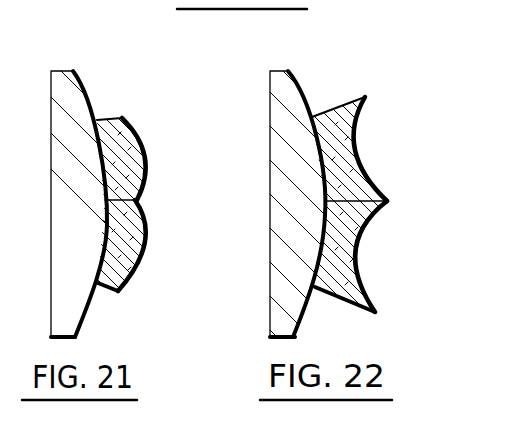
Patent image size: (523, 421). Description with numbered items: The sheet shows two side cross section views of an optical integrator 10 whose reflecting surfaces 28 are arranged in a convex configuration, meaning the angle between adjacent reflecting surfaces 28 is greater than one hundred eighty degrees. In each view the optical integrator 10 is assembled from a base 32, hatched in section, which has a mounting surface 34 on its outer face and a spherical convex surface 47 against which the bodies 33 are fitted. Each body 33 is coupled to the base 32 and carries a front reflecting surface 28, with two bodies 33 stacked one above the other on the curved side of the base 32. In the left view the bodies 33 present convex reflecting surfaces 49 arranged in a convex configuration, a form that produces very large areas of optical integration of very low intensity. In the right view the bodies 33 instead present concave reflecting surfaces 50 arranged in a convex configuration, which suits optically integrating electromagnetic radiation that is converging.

In FIG. 21, the optical integrator 10 is at (14, 114).
In FIG. 22, the optical integrator 10 is at (240, 70).
In FIG. 21, the reflecting surfaces 28 is at (128, 128).
In FIG. 22, the reflecting surfaces 28 is at (357, 147).
In FIG. 21, the base 32 is at (53, 272).
In FIG. 22, the base 32 is at (270, 182).
In FIG. 21, the bodies 33 is at (113, 118).
In FIG. 22, the bodies 33 is at (365, 103).
In FIG. 21, the mounting surface 34 is at (84, 85).
In FIG. 22, the mounting surface 34 is at (303, 91).
In FIG. 21, the spherical convex surface 47 is at (107, 187).
In FIG. 22, the spherical convex surface 47 is at (318, 146).
In FIG. 21, the convex reflecting surfaces 49 is at (145, 170).
In FIG. 22, the concave reflecting surfaces 50 is at (363, 173).